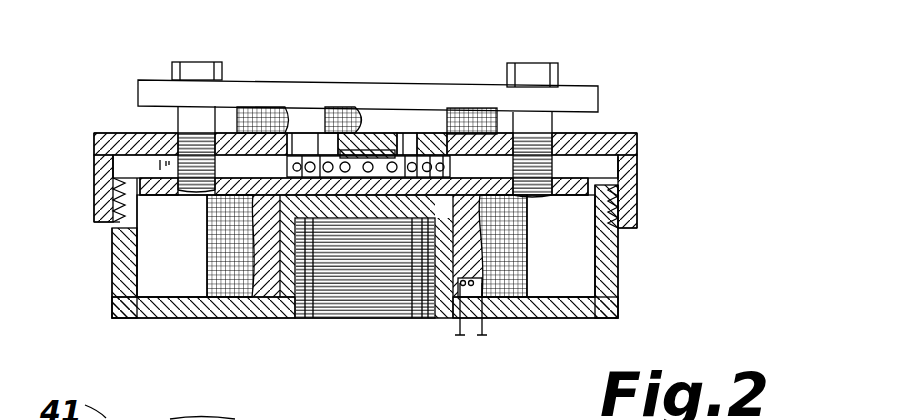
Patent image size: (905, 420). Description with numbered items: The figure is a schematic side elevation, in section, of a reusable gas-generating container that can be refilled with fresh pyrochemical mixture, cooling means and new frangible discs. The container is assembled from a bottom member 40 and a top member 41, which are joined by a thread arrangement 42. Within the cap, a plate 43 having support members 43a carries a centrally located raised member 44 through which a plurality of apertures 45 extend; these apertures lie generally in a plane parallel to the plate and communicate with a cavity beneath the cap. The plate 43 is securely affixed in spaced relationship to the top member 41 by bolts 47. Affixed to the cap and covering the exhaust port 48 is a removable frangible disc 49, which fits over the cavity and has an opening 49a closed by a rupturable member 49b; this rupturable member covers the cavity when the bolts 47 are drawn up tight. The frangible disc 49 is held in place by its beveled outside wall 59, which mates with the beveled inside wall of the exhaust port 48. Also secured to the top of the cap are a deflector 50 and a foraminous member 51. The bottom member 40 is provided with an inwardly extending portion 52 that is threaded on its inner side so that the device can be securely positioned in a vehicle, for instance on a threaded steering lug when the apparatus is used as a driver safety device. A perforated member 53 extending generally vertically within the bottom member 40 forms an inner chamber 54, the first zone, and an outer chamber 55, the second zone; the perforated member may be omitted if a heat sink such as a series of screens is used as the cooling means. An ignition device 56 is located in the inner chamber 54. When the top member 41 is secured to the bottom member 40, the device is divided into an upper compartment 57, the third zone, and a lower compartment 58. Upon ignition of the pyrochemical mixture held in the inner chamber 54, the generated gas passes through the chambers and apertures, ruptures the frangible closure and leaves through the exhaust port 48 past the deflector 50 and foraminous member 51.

The bottom member 40 is at (620, 258).
The top member 41 is at (640, 173).
The thread arrangement 42 is at (635, 210).
The plate 43 is at (152, 172).
The support members 43a is at (160, 193).
The raised member 44 is at (457, 155).
The apertures 45 is at (418, 157).
The bolts 47 is at (558, 76).
The exhaust port 48 is at (295, 127).
The frangible disc 49 is at (297, 150).
The opening 49a is at (342, 152).
The rupturable member 49b is at (372, 152).
The deflector 50 is at (150, 92).
The foraminous member 51 is at (257, 118).
The inwardly extending portion 52 is at (433, 292).
The perforated member 53 is at (527, 280).
The inner chamber 54 is at (268, 283).
The outer chamber 55 is at (155, 260).
The ignition device 56 is at (473, 282).
The upper compartment 57 is at (605, 172).
The lower compartment 58 is at (618, 295).
The beveled outside wall 59 is at (446, 160).